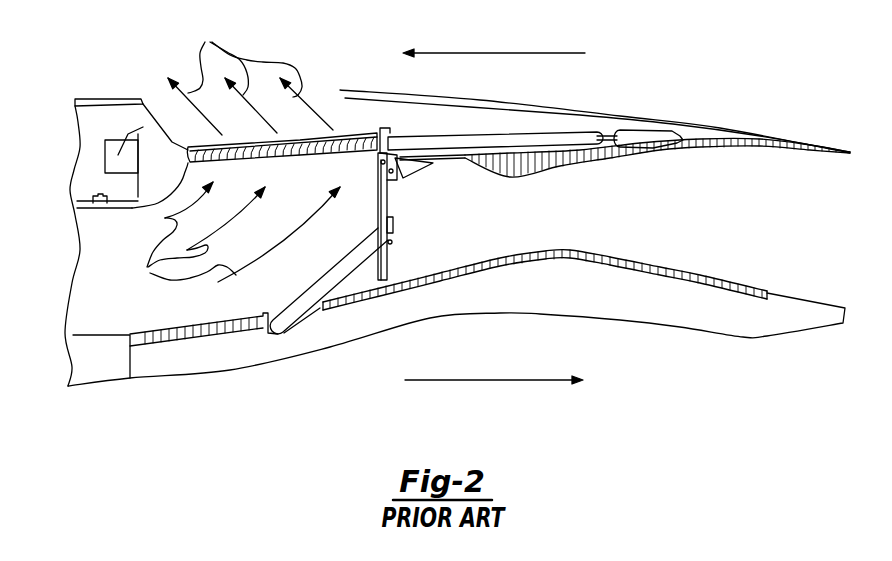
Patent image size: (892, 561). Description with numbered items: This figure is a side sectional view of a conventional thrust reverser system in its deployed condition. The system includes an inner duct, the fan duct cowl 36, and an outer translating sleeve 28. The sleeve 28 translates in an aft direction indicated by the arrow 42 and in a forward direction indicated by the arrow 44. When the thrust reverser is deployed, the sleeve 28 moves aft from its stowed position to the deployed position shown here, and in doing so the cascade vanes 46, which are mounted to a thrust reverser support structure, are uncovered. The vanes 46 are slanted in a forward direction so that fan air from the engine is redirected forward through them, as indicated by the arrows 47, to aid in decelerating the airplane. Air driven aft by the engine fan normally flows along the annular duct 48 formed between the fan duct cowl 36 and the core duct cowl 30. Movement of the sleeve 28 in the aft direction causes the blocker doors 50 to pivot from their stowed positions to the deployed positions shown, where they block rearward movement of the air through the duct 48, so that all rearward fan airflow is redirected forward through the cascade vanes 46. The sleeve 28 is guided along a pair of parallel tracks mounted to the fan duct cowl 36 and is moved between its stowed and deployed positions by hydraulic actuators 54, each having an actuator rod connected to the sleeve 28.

The translating sleeve 28 is at (572, 112).
The core duct cowl 30 is at (577, 250).
The fan duct cowl 36 is at (578, 165).
The aft direction arrow 42 is at (522, 382).
The forward direction arrow 44 is at (515, 53).
The cascade vanes 46 is at (313, 164).
The redirected fan air arrows 47 is at (233, 154).
The annular duct 48 is at (317, 270).
The blocker doors 50 is at (390, 257).
The hydraulic actuators 54 is at (447, 138).